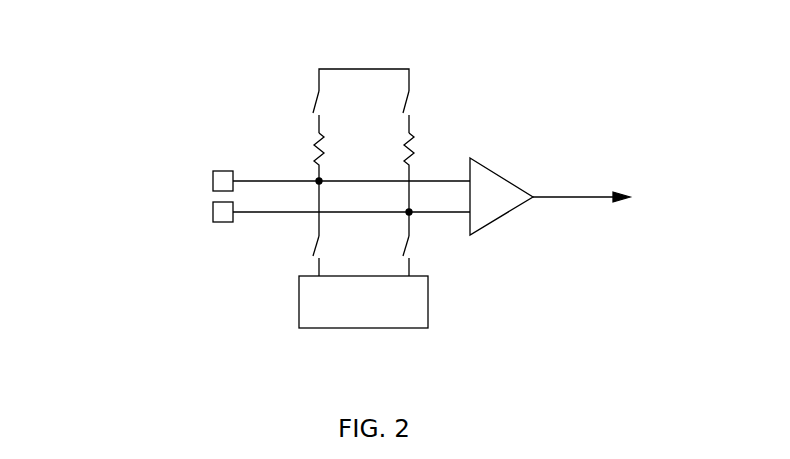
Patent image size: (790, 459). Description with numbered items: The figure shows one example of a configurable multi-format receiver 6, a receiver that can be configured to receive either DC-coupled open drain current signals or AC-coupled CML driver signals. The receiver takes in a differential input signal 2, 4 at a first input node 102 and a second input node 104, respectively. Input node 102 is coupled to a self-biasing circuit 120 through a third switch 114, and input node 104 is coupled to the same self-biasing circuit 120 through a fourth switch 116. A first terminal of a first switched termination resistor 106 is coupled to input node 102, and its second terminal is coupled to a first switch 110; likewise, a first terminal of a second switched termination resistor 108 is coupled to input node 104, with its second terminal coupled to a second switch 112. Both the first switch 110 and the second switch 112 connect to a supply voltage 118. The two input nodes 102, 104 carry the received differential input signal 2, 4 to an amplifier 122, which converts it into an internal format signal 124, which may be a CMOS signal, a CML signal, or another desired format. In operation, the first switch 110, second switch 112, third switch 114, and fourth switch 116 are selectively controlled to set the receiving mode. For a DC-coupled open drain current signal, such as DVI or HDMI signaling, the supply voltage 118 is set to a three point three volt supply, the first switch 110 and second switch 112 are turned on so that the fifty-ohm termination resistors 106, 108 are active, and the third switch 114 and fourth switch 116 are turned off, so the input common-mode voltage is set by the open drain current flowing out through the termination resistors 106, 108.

The configurable multi-format RCV 1 6 is at (237, 50).
The differential input signal 2 is at (212, 178).
The differential input signal 4 is at (212, 219).
The first input node 102 is at (319, 181).
The second input node 104 is at (413, 215).
The switched resistor RT1 106 is at (342, 158).
The switched resistor RT2 108 is at (432, 172).
The switch S1 110 is at (354, 112).
The switch S2 112 is at (444, 112).
The switch S3 114 is at (340, 231).
The switch S4 116 is at (430, 246).
The supply voltage VRX 118 is at (373, 67).
The self-biasing circuit 120 is at (428, 318).
The amplifier 122 is at (501, 196).
The internal format signal 124 is at (635, 186).